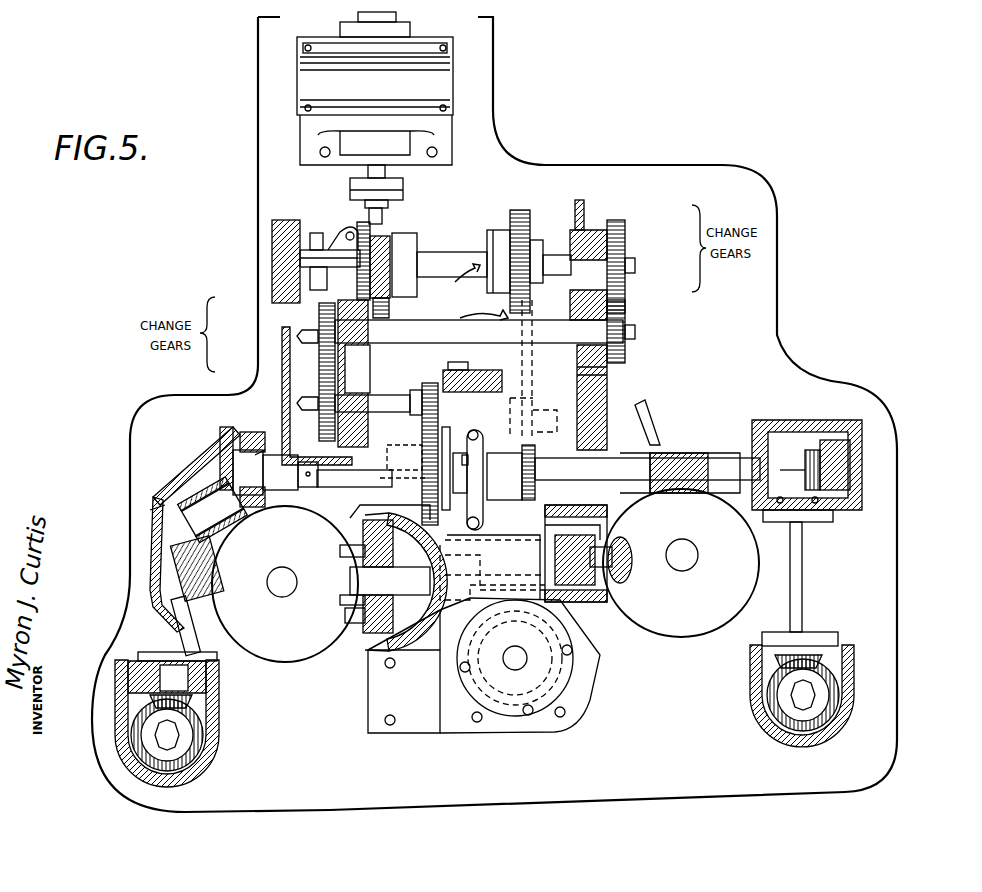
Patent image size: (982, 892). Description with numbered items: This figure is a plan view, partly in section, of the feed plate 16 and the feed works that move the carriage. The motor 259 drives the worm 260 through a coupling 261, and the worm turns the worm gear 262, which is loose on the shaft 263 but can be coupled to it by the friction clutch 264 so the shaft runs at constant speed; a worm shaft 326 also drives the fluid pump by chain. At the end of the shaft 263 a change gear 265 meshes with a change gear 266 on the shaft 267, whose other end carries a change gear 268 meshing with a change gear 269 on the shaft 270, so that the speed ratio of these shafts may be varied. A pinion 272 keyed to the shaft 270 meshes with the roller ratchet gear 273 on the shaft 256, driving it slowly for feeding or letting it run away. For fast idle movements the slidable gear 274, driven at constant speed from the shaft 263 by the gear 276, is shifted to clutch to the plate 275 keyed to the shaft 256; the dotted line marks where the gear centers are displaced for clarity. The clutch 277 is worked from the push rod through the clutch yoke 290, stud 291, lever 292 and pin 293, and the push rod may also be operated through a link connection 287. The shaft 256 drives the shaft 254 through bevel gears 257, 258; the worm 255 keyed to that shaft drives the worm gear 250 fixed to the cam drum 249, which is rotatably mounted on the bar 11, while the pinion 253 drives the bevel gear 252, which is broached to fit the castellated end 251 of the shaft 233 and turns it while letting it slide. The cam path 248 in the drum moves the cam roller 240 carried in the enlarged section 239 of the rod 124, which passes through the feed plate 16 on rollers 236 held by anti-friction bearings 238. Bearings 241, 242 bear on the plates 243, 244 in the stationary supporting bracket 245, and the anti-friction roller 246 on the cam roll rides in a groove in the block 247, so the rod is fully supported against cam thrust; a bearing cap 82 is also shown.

The feed plate 16 is at (722, 172).
The motor 259 is at (300, 93).
The coupling 261 is at (403, 190).
The worm shaft 326 is at (388, 210).
The friction clutch 264 is at (362, 226).
The worm 260 is at (392, 250).
The worm gear 262 is at (390, 308).
The shaft 263 is at (448, 262).
The gear 276 is at (525, 212).
The change gear 265 is at (625, 235).
The change gear 266 is at (630, 300).
The shaft 267 is at (560, 355).
The change gear 268 is at (322, 318).
The change gear 269 is at (322, 380).
The shaft 270 is at (386, 394).
The pinion 272 is at (436, 382).
The link connection 287 is at (470, 370).
The roller ratchet gear 273 is at (428, 460).
The plate 275 is at (428, 482).
The plate 243 is at (392, 520).
The pin 293 is at (463, 427).
The lever 292 is at (480, 445).
The clutch yoke 290 is at (504, 476).
The clutch 277 is at (483, 495).
The stud 291 is at (461, 525).
The slidable gear 274 is at (535, 465).
The shaft 256 is at (623, 450).
The bevel gear 258 is at (265, 435).
The bevel gear 257 is at (222, 462).
The worm 255 is at (180, 552).
The shaft 254 is at (175, 645).
The worm gear 250 is at (708, 520).
The bar 11 is at (276, 590).
The rollers 236 is at (605, 528).
The cam drum 249 is at (352, 578).
The cam roller 240 is at (363, 575).
The anti-friction bearing 241 is at (355, 548).
The cam path 248 is at (352, 594).
The anti-friction bearing 242 is at (350, 612).
The rod 124 is at (610, 585).
The anti-friction bearings 238 is at (545, 535).
The anti-friction roller 246 is at (492, 567).
The enlarged section 239 is at (372, 645).
The plate 244 is at (372, 650).
The stationary supporting bracket 245 is at (413, 655).
The block 247 is at (510, 665).
The bearing cap 82 is at (550, 690).
The castellated upper end 251 is at (150, 735).
The bevel gear 252 is at (195, 760).
The shaft 233 is at (185, 745).
The pinion 253 is at (180, 715).